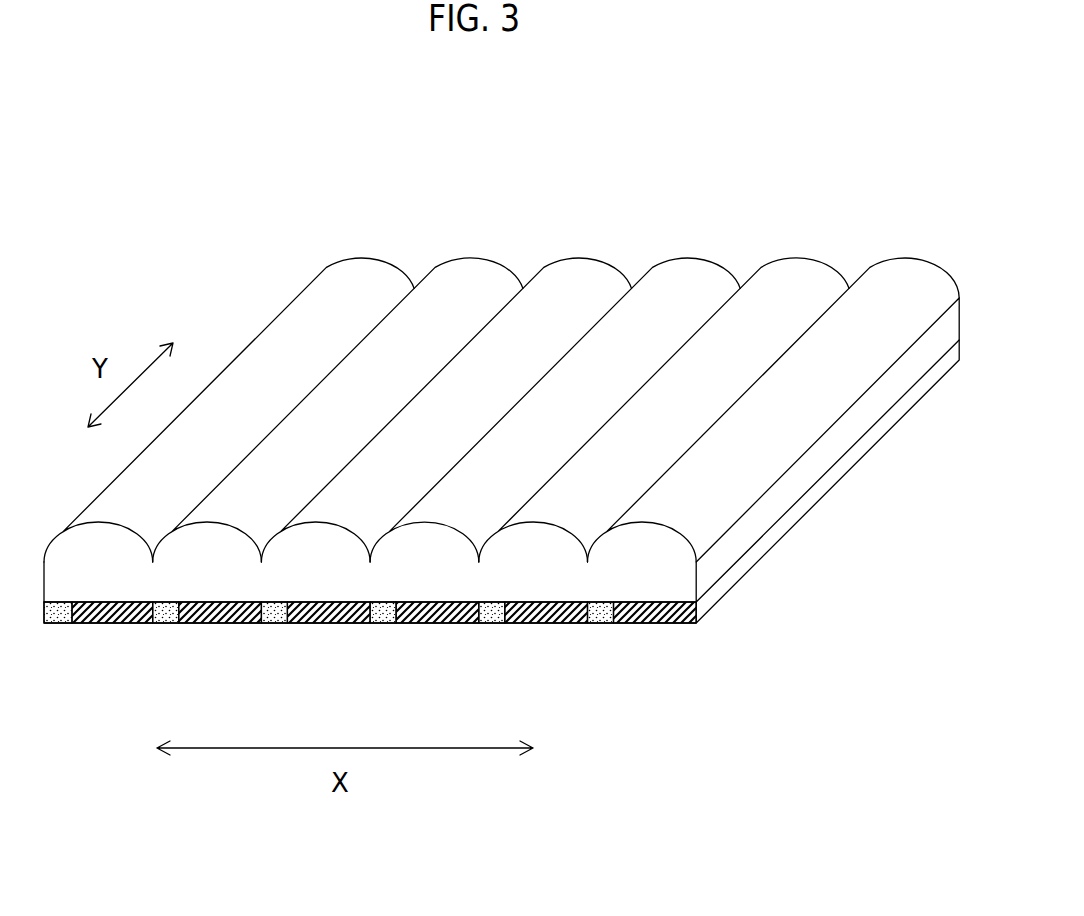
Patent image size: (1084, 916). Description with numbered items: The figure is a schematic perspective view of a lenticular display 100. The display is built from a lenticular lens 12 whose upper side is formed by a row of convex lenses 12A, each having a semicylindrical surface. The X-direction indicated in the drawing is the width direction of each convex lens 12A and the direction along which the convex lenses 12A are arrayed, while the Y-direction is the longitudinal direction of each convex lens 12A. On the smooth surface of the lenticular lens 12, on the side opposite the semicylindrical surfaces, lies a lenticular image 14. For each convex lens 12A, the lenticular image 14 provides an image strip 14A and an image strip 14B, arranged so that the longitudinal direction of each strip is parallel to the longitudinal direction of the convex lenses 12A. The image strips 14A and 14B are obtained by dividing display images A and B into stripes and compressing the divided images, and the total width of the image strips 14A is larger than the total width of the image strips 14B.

The lenticular display 100 is at (732, 152).
The lenticular lens 12 is at (853, 437).
The convex lens 12A is at (582, 257).
The lenticular image 14 is at (790, 533).
The image strip 14A is at (345, 623).
The image strip 14B is at (275, 623).